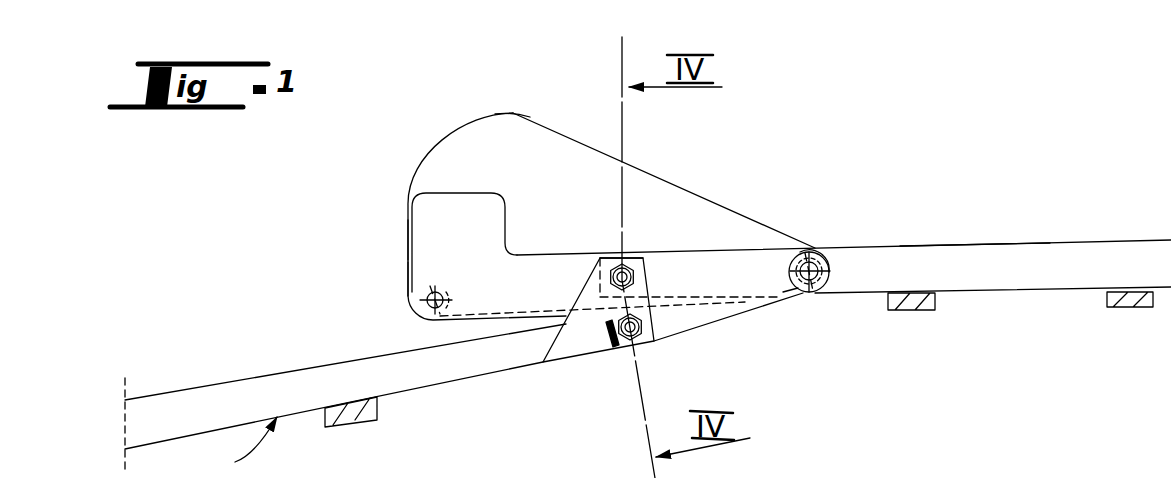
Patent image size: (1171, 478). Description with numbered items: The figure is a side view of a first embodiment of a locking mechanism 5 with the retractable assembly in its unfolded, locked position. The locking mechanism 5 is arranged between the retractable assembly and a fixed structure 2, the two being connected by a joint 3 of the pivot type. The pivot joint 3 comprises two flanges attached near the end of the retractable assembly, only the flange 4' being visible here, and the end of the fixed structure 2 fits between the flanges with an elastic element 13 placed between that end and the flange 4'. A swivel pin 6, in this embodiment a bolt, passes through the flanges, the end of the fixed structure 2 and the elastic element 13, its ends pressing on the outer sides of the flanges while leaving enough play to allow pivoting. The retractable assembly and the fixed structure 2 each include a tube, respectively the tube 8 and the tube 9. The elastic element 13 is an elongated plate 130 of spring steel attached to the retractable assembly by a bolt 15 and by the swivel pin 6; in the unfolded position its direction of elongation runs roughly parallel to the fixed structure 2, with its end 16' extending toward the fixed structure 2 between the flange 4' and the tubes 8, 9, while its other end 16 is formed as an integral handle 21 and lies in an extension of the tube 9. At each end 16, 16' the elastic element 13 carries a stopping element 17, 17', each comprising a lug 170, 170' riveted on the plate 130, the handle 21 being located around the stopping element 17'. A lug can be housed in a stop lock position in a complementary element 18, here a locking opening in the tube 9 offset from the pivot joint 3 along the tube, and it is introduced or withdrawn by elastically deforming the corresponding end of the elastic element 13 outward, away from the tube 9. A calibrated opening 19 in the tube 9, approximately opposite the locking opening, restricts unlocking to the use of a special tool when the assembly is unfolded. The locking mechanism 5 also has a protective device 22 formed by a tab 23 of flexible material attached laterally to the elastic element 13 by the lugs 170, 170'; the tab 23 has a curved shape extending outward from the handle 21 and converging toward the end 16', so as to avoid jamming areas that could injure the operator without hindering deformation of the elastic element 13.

The fixed structure 2 is at (1077, 240).
The joint 3 is at (647, 253).
The flange 4' is at (598, 338).
The locking mechanism 5 is at (783, 95).
The swivel pin 6 is at (620, 262).
The tube 8 is at (277, 376).
The tube 9 is at (973, 253).
The elastic element 13 is at (530, 220).
The bolt 15 is at (656, 333).
The end 16 is at (360, 255).
The end 16' is at (856, 215).
The stopping element 17 is at (841, 313).
The stopping element 17' is at (379, 302).
The complementary element 18 is at (417, 323).
The calibrated opening 19 is at (782, 293).
The handle 21 is at (433, 215).
The protective device 22 is at (522, 113).
The tab 23 is at (591, 211).
The plate 130 is at (760, 267).
The lug 170 is at (875, 192).
The lug 170' is at (381, 241).